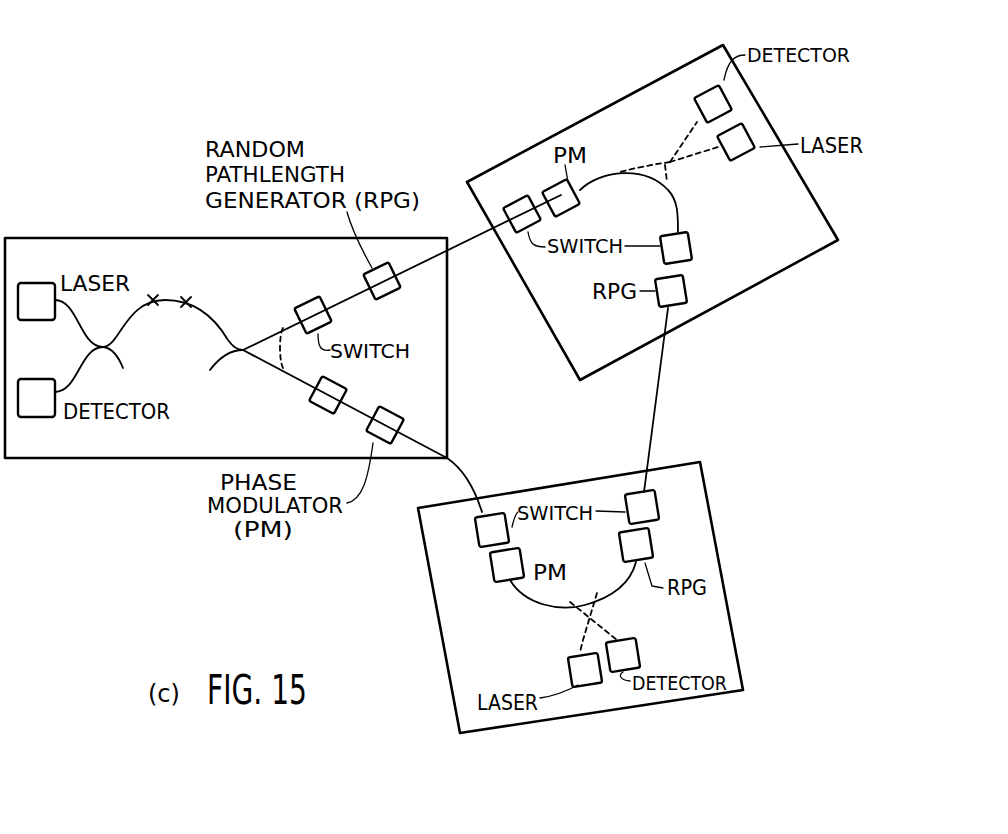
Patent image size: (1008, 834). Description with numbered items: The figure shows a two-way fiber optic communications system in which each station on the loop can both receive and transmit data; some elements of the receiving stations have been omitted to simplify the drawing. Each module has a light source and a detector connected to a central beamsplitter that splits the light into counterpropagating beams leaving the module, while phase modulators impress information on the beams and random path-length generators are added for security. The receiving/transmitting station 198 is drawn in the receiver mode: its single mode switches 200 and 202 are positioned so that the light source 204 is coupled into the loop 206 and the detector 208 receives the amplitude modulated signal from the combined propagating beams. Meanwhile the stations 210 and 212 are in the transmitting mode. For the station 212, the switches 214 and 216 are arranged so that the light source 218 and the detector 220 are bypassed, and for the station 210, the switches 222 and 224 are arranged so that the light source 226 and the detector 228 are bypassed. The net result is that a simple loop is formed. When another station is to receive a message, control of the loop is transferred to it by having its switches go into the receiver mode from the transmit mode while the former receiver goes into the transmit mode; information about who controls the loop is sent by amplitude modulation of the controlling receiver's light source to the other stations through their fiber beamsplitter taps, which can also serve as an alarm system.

The receiving/transmitting station 198 is at (135, 238).
The single mode switch 200 is at (316, 297).
The single mode switch 202 is at (322, 411).
The light source 204 is at (38, 283).
The loop 206 is at (514, 404).
The detector 208 is at (38, 417).
The station 210 is at (762, 108).
The station 212 is at (655, 705).
The switch 214 is at (634, 492).
The switch 216 is at (492, 512).
The light source 218 is at (568, 665).
The detector 220 is at (647, 650).
The switch 222 is at (694, 247).
The switch 224 is at (512, 198).
The light source 226 is at (740, 153).
The detector 228 is at (700, 88).